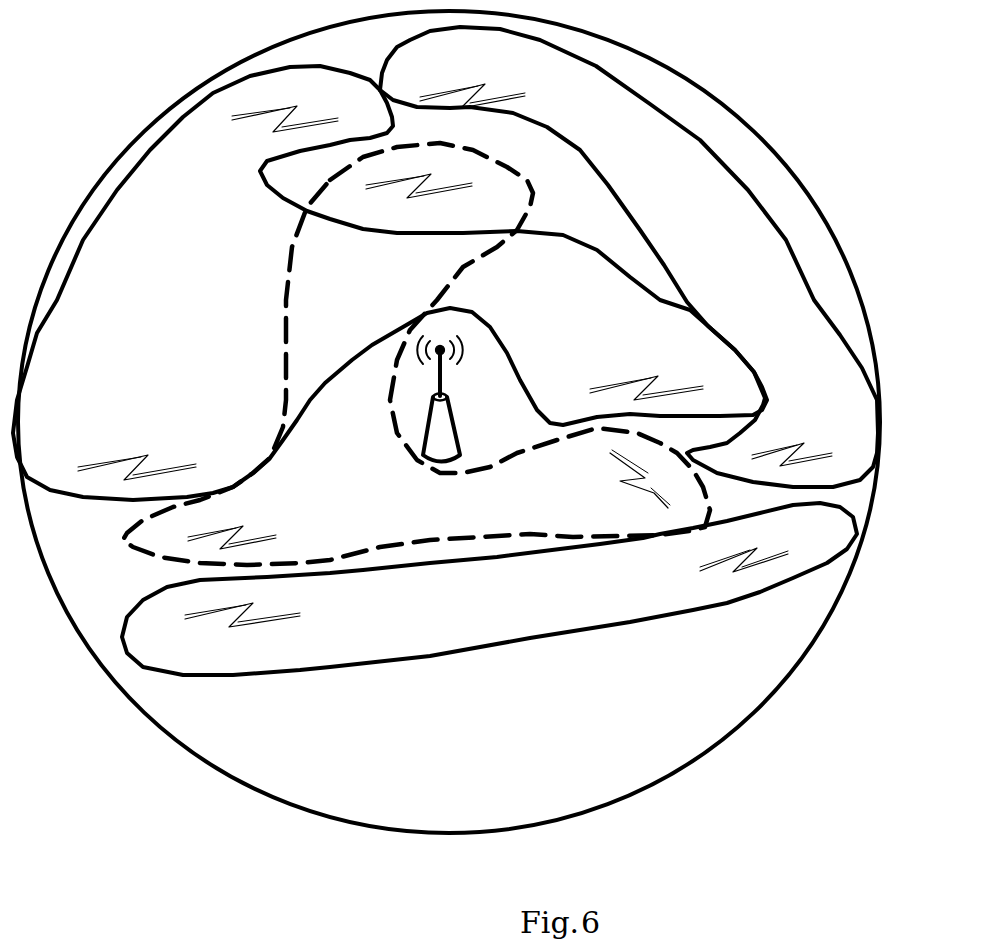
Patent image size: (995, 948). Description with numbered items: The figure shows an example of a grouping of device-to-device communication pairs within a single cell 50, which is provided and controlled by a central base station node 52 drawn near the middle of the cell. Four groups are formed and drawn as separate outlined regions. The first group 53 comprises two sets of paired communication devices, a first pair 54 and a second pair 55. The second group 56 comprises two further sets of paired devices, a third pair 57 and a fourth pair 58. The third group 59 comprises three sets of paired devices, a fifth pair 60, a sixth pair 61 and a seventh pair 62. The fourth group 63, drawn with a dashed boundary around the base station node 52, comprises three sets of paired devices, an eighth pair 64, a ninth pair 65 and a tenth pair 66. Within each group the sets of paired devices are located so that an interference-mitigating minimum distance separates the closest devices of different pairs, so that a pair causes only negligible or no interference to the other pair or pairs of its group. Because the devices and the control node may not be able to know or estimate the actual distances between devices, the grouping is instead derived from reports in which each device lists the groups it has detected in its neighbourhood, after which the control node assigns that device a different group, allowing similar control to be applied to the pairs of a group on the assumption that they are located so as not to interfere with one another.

The cell 50 is at (330, 833).
The eNB 52 is at (492, 393).
The Group 1 53 is at (733, 280).
The set of paired communication devices (D5, D6) 54 is at (478, 82).
The set of paired communication devices (D13, D14) 55 is at (796, 443).
The Group 2 56 is at (494, 642).
The set of paired communication devices (D11, D12) 57 is at (747, 587).
The set of paired communication devices (D19, D20) 58 is at (247, 637).
The Group 3 59 is at (147, 336).
The set of paired communication devices (D1, D2) 60 is at (290, 142).
The set of paired communication devices (D17, D18) 61 is at (139, 458).
The set of paired communication devices (D9, D10) 62 is at (656, 368).
The Group 4 63 is at (355, 515).
The set of paired communication devices (D7, D8) 64 is at (632, 483).
The set of paired communication devices (D15, D16) 65 is at (234, 528).
The set of paired communication devices (D3, D4) 66 is at (423, 217).